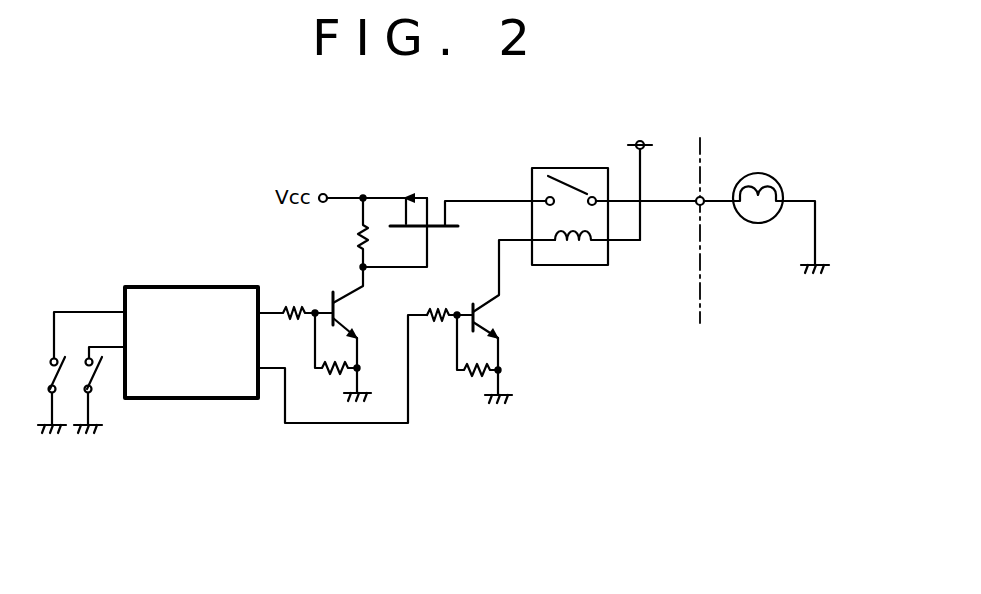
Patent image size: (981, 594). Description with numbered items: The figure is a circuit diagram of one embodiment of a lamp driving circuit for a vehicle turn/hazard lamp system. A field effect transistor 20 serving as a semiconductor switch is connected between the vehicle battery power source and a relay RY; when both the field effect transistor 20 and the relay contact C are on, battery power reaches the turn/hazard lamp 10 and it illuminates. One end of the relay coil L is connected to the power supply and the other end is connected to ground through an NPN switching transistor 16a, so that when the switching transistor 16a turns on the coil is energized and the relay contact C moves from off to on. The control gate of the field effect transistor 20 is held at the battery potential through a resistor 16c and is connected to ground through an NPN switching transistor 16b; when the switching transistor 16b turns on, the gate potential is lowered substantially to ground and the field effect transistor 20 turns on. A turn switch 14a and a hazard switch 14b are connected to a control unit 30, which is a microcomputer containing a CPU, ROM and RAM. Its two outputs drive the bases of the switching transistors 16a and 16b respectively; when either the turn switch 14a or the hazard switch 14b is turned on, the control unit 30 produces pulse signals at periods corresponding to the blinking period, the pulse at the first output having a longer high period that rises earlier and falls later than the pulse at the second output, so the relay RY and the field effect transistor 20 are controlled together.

The turn/hazard lamp 10 is at (770, 173).
The turn switch 14a is at (63, 387).
The hazard switch 14b is at (101, 386).
The NPN switching transistor 16a is at (500, 318).
The NPN switching transistor 16b is at (350, 307).
The resistor 16c is at (356, 234).
The field effect transistor 20 is at (425, 185).
The control unit 30 is at (212, 286).
The relay RY is at (572, 168).
The relay coil L is at (572, 244).
The relay contact C is at (585, 190).